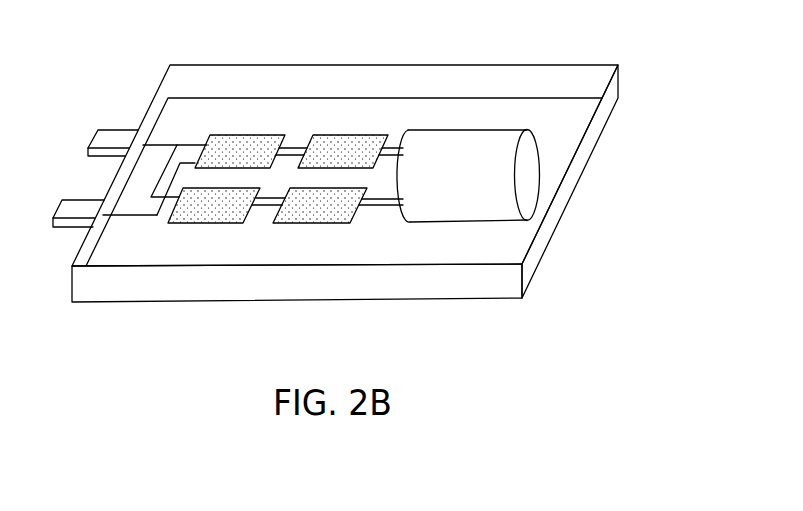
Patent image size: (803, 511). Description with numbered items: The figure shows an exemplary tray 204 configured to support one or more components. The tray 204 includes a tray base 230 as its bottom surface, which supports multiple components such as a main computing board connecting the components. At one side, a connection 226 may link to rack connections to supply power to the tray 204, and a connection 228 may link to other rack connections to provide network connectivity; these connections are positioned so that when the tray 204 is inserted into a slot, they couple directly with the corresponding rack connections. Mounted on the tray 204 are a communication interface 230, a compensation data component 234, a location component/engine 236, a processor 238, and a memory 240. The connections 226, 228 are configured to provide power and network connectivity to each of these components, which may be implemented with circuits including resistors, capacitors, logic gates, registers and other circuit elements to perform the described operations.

The tray 204 is at (578, 65).
The connection 226 is at (113, 128).
The connection 228 is at (88, 199).
The communication interface 230 is at (212, 134).
The compensation data component 234 is at (318, 134).
The location component/engine 236 is at (440, 132).
The processor 238 is at (173, 222).
The memory 240 is at (277, 222).